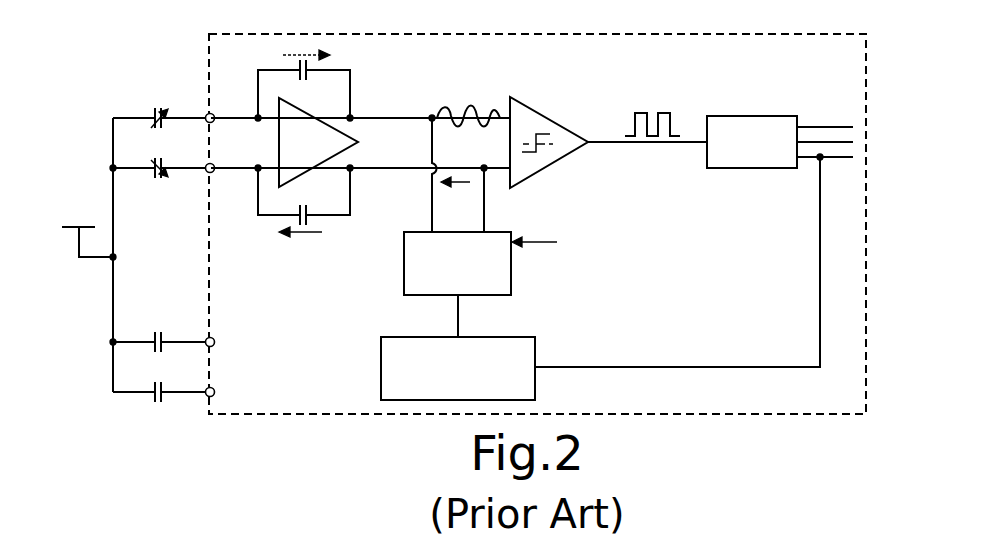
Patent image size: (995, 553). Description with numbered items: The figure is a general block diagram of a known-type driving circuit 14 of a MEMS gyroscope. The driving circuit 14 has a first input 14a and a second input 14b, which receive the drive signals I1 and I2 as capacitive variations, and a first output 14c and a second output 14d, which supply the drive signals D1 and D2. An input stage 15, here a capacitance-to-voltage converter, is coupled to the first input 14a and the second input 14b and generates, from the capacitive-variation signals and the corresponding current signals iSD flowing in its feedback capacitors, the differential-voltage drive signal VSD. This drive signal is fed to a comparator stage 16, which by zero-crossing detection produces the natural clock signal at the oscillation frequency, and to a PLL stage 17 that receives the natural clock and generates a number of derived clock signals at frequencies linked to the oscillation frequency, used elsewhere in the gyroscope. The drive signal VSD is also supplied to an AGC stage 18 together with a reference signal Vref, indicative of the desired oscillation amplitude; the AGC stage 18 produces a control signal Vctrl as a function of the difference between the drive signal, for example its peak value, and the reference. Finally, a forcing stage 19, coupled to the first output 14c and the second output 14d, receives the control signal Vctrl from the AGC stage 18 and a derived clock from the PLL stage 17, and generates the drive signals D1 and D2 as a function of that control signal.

The driving circuit 14 is at (125, 90).
The first input 14a is at (207, 114).
The second input 14b is at (207, 172).
The first output 14c is at (207, 340).
The second output 14d is at (207, 396).
The input stage 15 is at (357, 113).
The comparator stage 16 is at (520, 101).
The PLL stage 17 is at (735, 166).
The AGC stage 18 is at (510, 272).
The forcing stage 19 is at (535, 353).